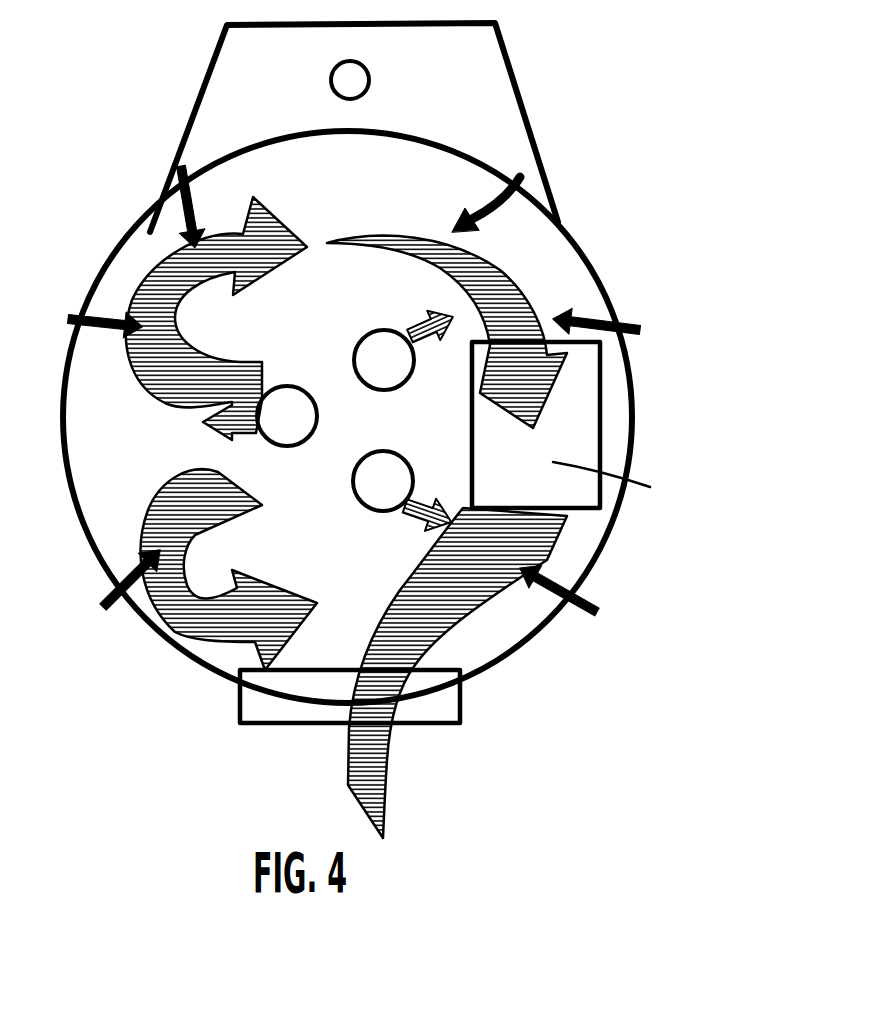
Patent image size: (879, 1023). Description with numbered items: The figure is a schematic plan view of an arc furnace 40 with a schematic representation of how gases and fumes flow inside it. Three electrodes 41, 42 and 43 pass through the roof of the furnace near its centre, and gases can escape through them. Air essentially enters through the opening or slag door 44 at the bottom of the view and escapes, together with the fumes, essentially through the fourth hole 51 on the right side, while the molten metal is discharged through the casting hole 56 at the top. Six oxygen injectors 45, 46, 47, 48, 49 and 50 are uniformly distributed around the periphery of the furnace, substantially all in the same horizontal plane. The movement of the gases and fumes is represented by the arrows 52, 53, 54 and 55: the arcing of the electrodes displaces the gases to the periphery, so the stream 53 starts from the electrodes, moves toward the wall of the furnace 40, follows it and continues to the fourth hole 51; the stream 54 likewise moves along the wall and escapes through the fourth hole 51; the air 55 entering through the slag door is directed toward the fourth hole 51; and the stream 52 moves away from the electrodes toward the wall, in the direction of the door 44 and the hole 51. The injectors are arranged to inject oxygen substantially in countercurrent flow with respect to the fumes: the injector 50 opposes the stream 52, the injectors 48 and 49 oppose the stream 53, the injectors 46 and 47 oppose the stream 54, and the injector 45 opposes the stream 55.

The furnace 40 is at (60, 428).
The electrode 41 is at (283, 410).
The electrode 42 is at (380, 343).
The electrode 43 is at (375, 483).
The slag door 44 is at (440, 697).
The oxygen injector 45 is at (590, 607).
The oxygen injector 46 is at (640, 340).
The oxygen injector 47 is at (518, 172).
The oxygen injector 48 is at (168, 215).
The oxygen injector 49 is at (68, 322).
The oxygen injector 50 is at (117, 605).
The fourth hole 51 is at (552, 447).
The gas stream 52 is at (150, 510).
The gas stream 53 is at (140, 383).
The gas stream 54 is at (417, 257).
The air stream 55 is at (400, 590).
The casting hole 56 is at (472, 92).